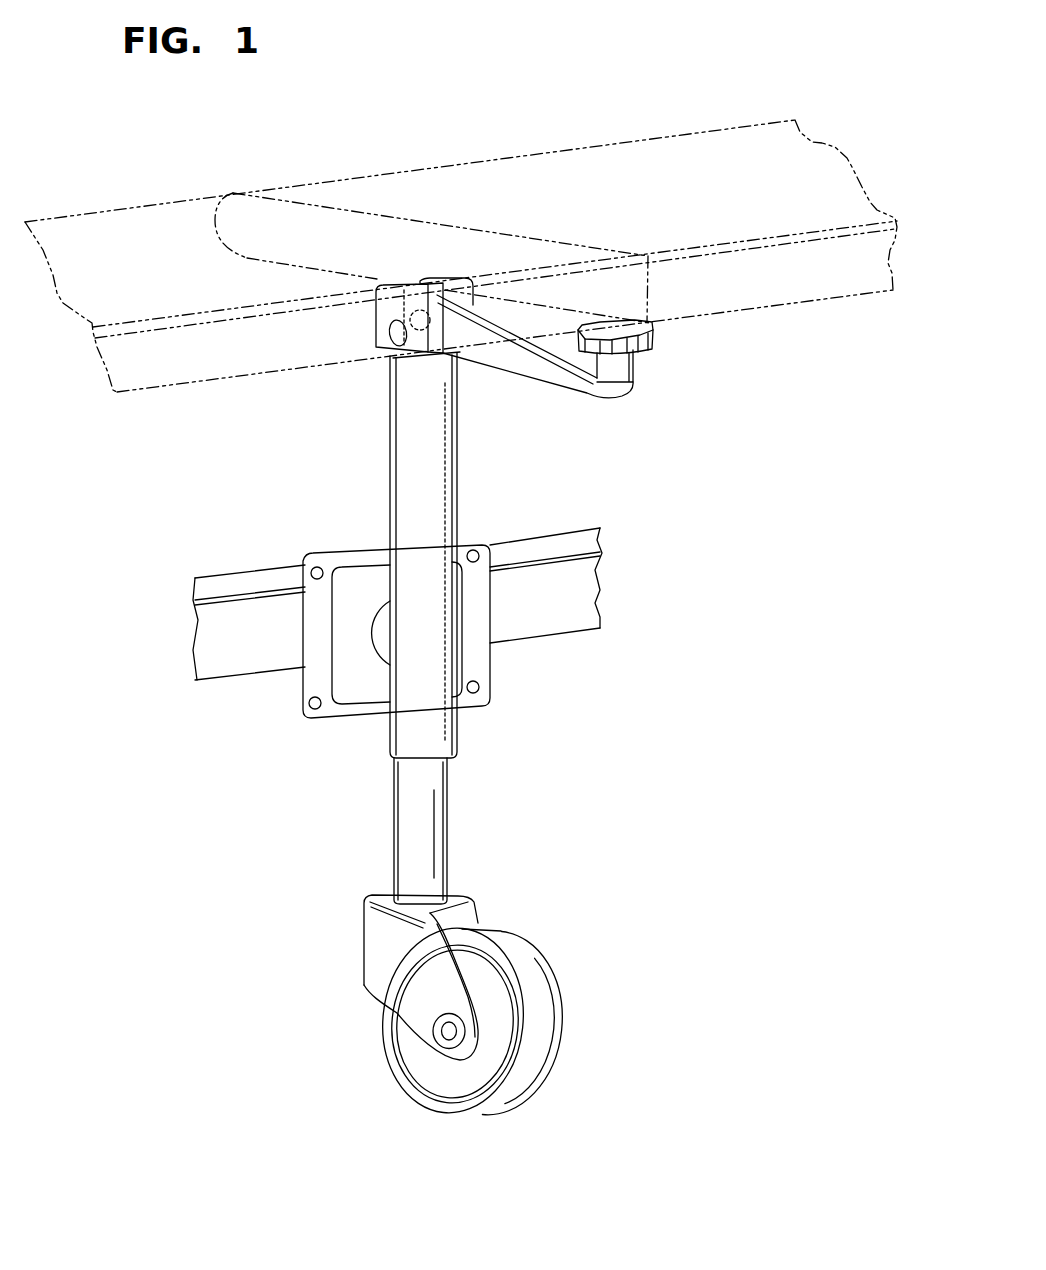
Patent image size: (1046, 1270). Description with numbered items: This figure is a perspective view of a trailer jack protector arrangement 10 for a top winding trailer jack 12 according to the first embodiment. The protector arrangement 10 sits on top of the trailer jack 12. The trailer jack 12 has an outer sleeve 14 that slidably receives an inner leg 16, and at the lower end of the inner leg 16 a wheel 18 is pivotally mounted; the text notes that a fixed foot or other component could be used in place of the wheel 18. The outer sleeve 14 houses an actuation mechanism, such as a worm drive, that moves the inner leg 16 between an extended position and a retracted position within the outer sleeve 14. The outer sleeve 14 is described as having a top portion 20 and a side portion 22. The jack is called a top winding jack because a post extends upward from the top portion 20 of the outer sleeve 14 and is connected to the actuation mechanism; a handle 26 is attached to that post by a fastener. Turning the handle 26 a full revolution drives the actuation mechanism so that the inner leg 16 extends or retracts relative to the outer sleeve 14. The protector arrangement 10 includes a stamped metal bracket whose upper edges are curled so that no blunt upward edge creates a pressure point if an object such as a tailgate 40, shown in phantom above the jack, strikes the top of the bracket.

The trailer jack protector arrangement 10 is at (517, 699).
The trailer jack 12 is at (405, 643).
The outer sleeve 14 is at (375, 735).
The inner leg 16 is at (428, 815).
The wheel 18 is at (532, 972).
The top portion 20 is at (395, 358).
The side portion 22 is at (400, 637).
The handle 26 is at (557, 373).
The tailgate 40 is at (657, 153).